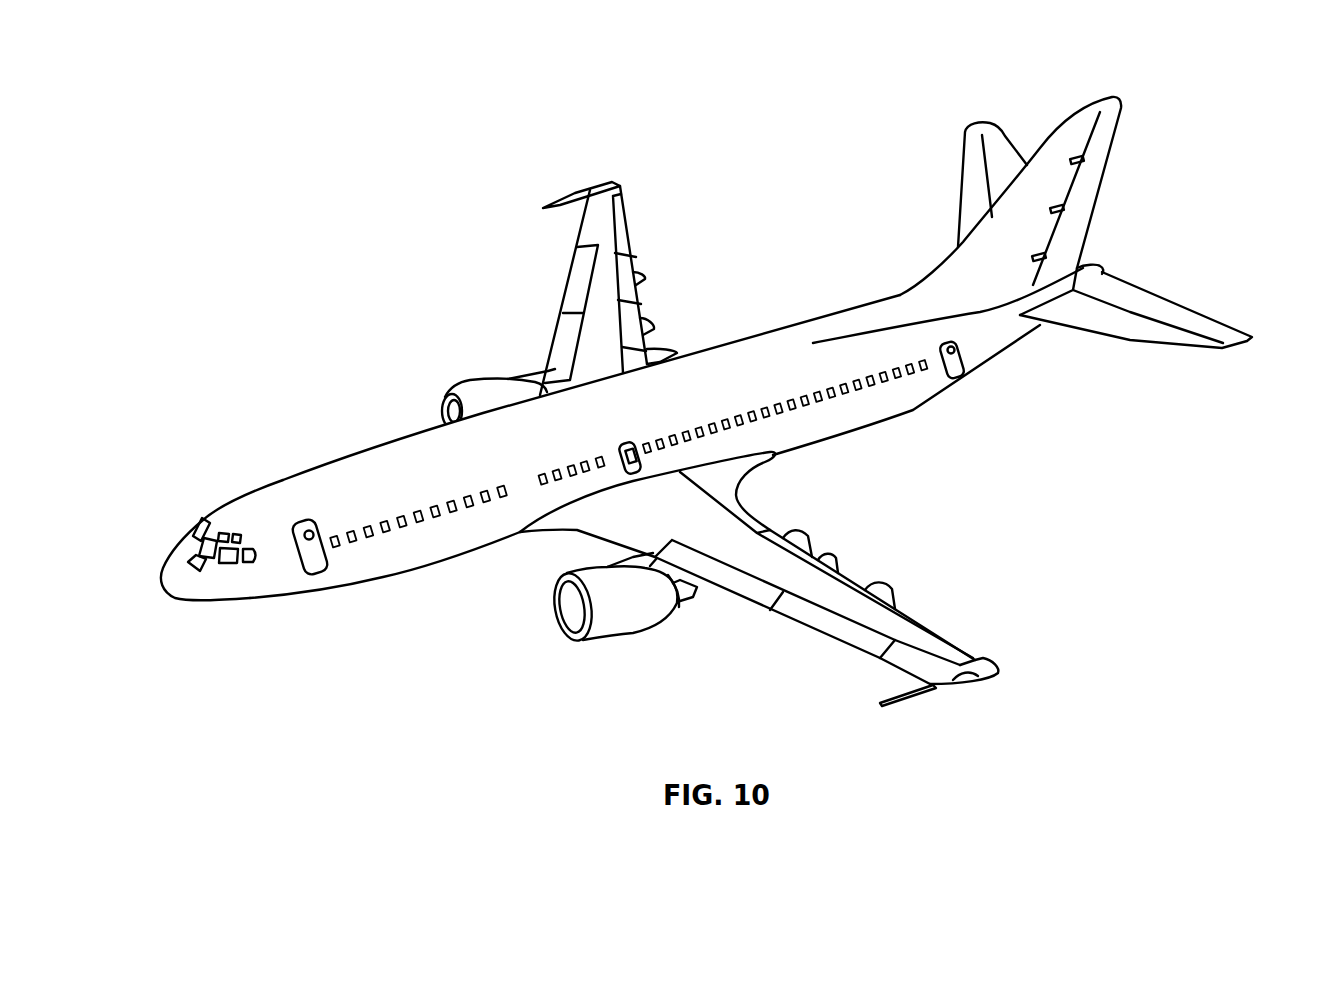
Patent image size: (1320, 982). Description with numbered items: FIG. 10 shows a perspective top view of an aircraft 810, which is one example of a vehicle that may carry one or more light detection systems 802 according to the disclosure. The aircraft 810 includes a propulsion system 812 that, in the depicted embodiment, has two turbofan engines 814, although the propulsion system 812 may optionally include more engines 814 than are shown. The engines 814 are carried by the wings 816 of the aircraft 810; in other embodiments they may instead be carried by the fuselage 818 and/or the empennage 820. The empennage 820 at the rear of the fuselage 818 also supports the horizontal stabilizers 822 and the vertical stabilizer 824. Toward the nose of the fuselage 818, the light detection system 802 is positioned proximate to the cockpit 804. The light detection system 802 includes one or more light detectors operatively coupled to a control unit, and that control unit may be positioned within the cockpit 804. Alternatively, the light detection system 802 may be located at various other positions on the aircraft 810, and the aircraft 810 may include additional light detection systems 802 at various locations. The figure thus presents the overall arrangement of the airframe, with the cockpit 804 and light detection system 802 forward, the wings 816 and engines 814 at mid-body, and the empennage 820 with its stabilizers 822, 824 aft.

The light detection system 802 is at (204, 568).
The cockpit 804 is at (233, 517).
The aircraft 810 is at (412, 162).
The propulsion system 812 is at (528, 688).
The turbofan engines 814 is at (628, 612).
The wings 816 is at (607, 192).
The fuselage 818 is at (383, 555).
The empennage 820 is at (1010, 202).
The horizontal stabilizers 822 is at (993, 130).
The vertical stabilizer 824 is at (1083, 110).